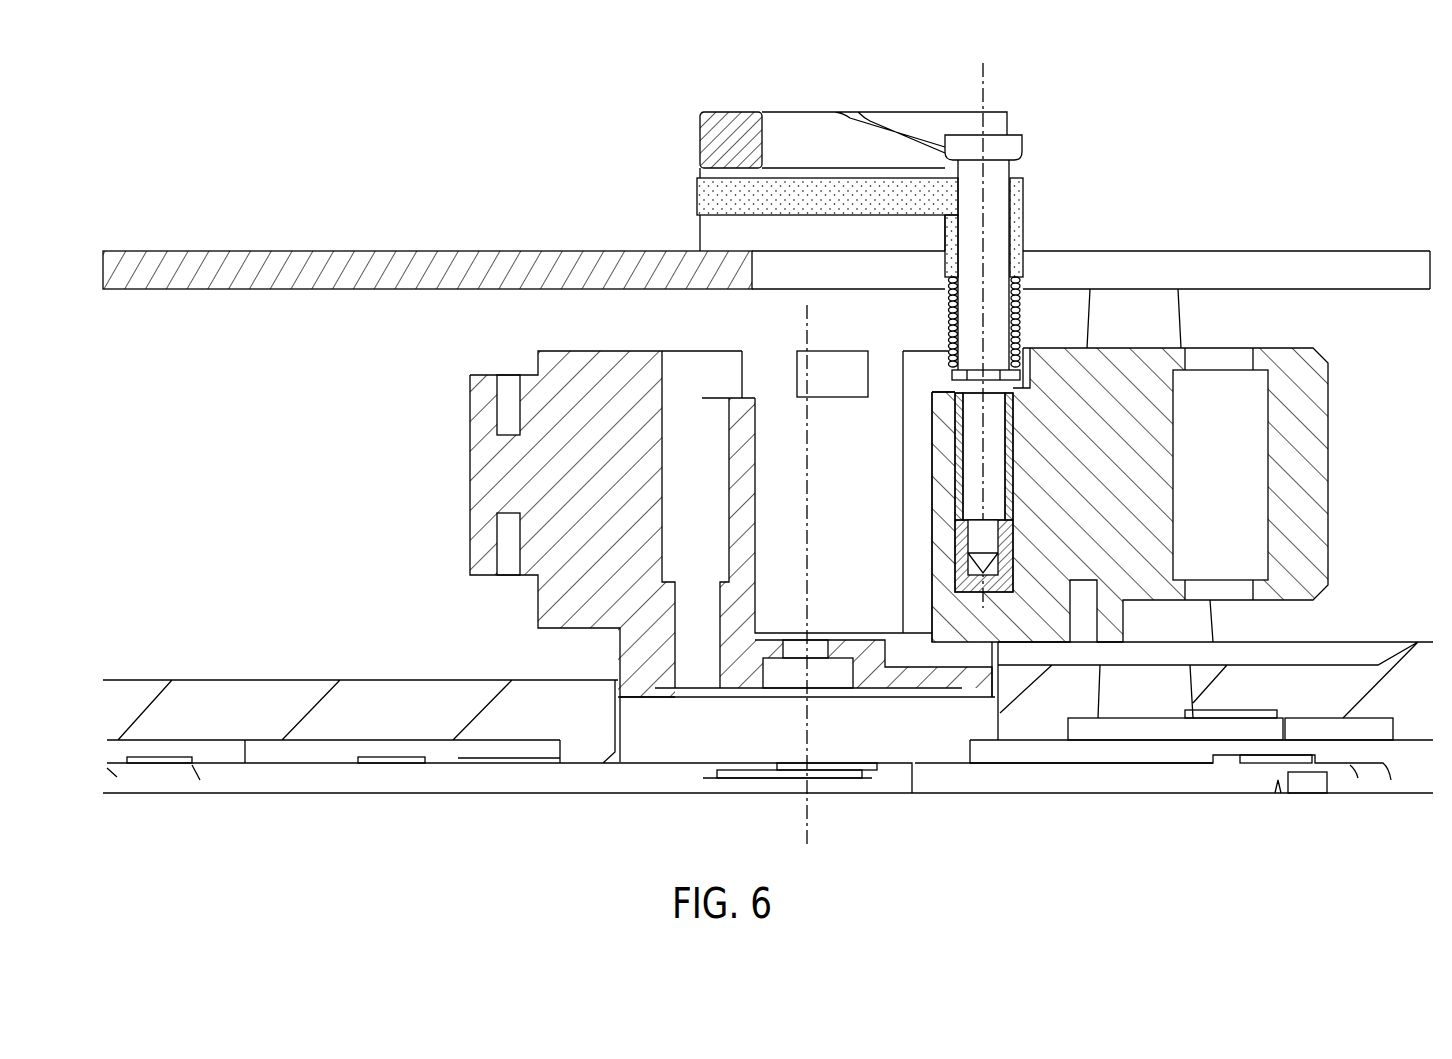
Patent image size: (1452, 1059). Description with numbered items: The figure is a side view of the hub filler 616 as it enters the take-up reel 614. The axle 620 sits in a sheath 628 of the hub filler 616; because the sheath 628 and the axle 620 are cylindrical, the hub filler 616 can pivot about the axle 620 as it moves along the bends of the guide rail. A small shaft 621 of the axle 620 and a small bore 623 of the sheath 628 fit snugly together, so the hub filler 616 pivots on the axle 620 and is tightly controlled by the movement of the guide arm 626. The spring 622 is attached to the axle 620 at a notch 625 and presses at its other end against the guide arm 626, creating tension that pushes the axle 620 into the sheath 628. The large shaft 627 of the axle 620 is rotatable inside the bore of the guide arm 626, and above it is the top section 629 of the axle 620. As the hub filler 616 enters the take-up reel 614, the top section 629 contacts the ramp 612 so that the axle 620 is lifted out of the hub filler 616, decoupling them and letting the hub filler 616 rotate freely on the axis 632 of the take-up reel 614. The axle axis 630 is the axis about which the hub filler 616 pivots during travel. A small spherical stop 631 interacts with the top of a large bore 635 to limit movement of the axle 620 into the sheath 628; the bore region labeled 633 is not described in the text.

The ramp 612 is at (853, 143).
The take-up reel 614 is at (513, 472).
The hub filler 616 is at (1112, 377).
The axle 620 is at (997, 182).
The small shaft 621 is at (977, 537).
The spring 622 is at (1022, 307).
The small bore 623 is at (982, 572).
The notch 625 is at (955, 393).
The guide arm 626 is at (697, 188).
The large shaft 627 is at (977, 252).
The sheath 628 is at (1010, 502).
The top section 629 is at (963, 147).
The axle axis 630 is at (985, 72).
The small spherical stop 631 is at (1000, 387).
The axis of take-up reel 632 is at (808, 828).
The bore 633 is at (960, 473).
The large bore 635 is at (1005, 433).